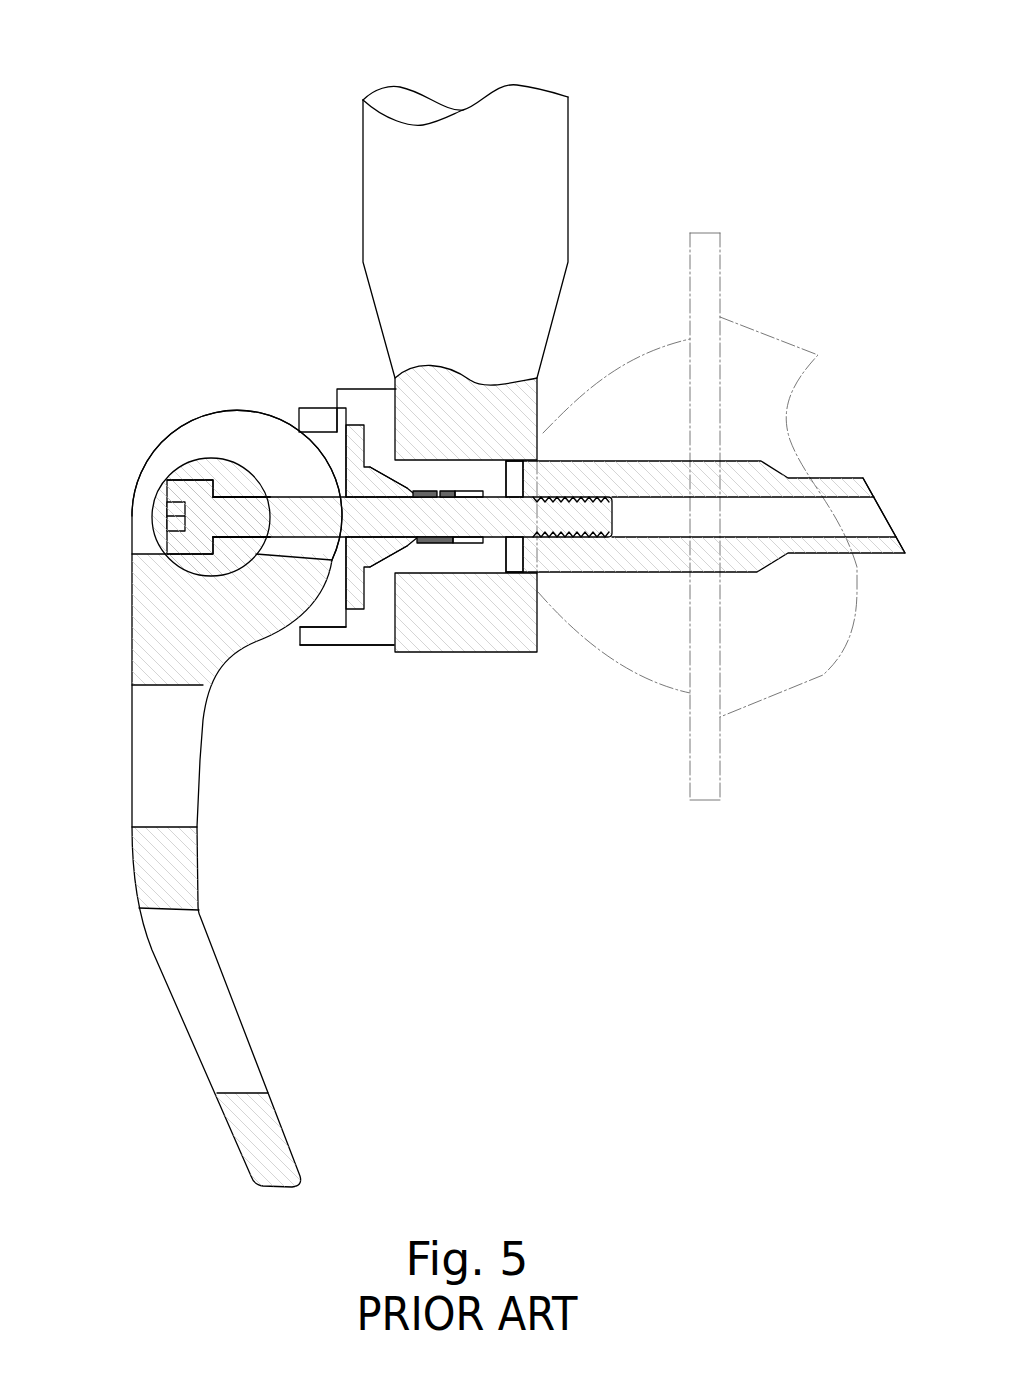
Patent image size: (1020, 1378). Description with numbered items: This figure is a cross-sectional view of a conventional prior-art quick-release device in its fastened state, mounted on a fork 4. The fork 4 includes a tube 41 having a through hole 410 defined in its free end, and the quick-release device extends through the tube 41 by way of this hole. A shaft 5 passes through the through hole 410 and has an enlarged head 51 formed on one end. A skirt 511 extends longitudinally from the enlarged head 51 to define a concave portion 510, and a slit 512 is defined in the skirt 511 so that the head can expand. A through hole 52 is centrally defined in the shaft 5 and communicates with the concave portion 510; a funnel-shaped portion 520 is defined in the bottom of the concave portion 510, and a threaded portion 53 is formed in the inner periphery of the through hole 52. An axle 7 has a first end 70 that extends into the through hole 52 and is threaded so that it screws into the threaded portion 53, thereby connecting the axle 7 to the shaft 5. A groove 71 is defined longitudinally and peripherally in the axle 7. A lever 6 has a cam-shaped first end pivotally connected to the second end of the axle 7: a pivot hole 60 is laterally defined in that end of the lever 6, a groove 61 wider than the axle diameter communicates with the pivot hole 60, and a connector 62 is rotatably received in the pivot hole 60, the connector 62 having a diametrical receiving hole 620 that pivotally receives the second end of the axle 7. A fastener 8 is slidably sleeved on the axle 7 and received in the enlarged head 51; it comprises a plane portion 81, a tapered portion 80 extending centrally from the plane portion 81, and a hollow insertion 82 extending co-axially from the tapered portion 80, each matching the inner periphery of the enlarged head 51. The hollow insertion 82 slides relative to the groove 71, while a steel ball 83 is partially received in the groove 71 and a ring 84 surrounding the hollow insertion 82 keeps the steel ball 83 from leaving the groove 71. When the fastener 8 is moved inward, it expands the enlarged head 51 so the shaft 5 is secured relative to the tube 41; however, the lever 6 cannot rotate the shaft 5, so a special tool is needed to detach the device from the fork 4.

The fork 4 is at (521, 367).
The tube 41 is at (535, 168).
The through hole 410 is at (447, 540).
The shaft 5 is at (680, 520).
The through hole 52 is at (802, 530).
The threaded portion 53 is at (601, 615).
The first end 70 is at (582, 537).
The lever 6 is at (179, 760).
The pivot hole 60 is at (170, 480).
The groove 61 is at (267, 430).
The connector 62 is at (208, 472).
The pivot spacer 620 is at (237, 493).
The axle 7 is at (356, 588).
The groove 71 is at (405, 487).
The fastener 8 is at (499, 520).
The tapered portion 80 is at (413, 543).
The plane portion 81 is at (357, 597).
The hollow insertion 82 is at (452, 547).
The steel ball 83 is at (433, 492).
The ring 84 is at (450, 492).
The enlarged head 51 is at (327, 530).
The concave portion 510 is at (322, 608).
The skirt 511 is at (323, 645).
The slit 512 is at (318, 418).
The funnel-shaped portion 520 is at (474, 660).